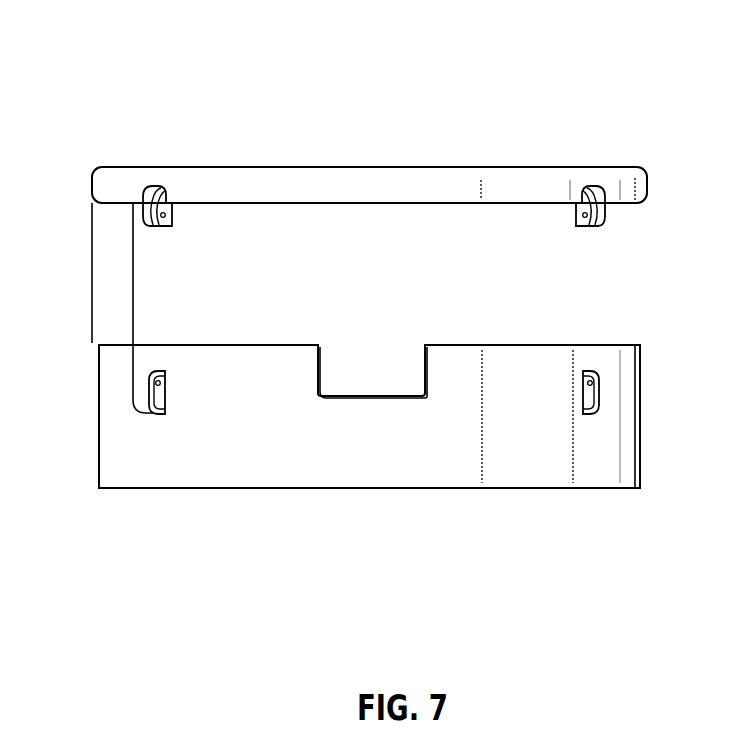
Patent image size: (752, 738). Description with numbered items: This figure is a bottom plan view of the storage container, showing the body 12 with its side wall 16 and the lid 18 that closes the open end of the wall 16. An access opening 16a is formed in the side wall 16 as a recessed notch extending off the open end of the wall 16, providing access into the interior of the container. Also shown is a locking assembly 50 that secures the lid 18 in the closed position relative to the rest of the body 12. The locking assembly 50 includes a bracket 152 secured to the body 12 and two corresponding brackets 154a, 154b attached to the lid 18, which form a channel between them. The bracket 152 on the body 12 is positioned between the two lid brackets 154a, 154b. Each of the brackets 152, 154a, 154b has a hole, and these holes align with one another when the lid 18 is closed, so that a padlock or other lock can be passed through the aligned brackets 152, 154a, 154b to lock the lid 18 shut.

The body 12 is at (118, 445).
The wall 16 is at (410, 458).
The access opening 16a is at (374, 353).
The lid 18 is at (413, 183).
The locking assembly 50 is at (133, 289).
The bracket 152 is at (163, 400).
The bracket 154a is at (150, 192).
The bracket 154b is at (170, 207).